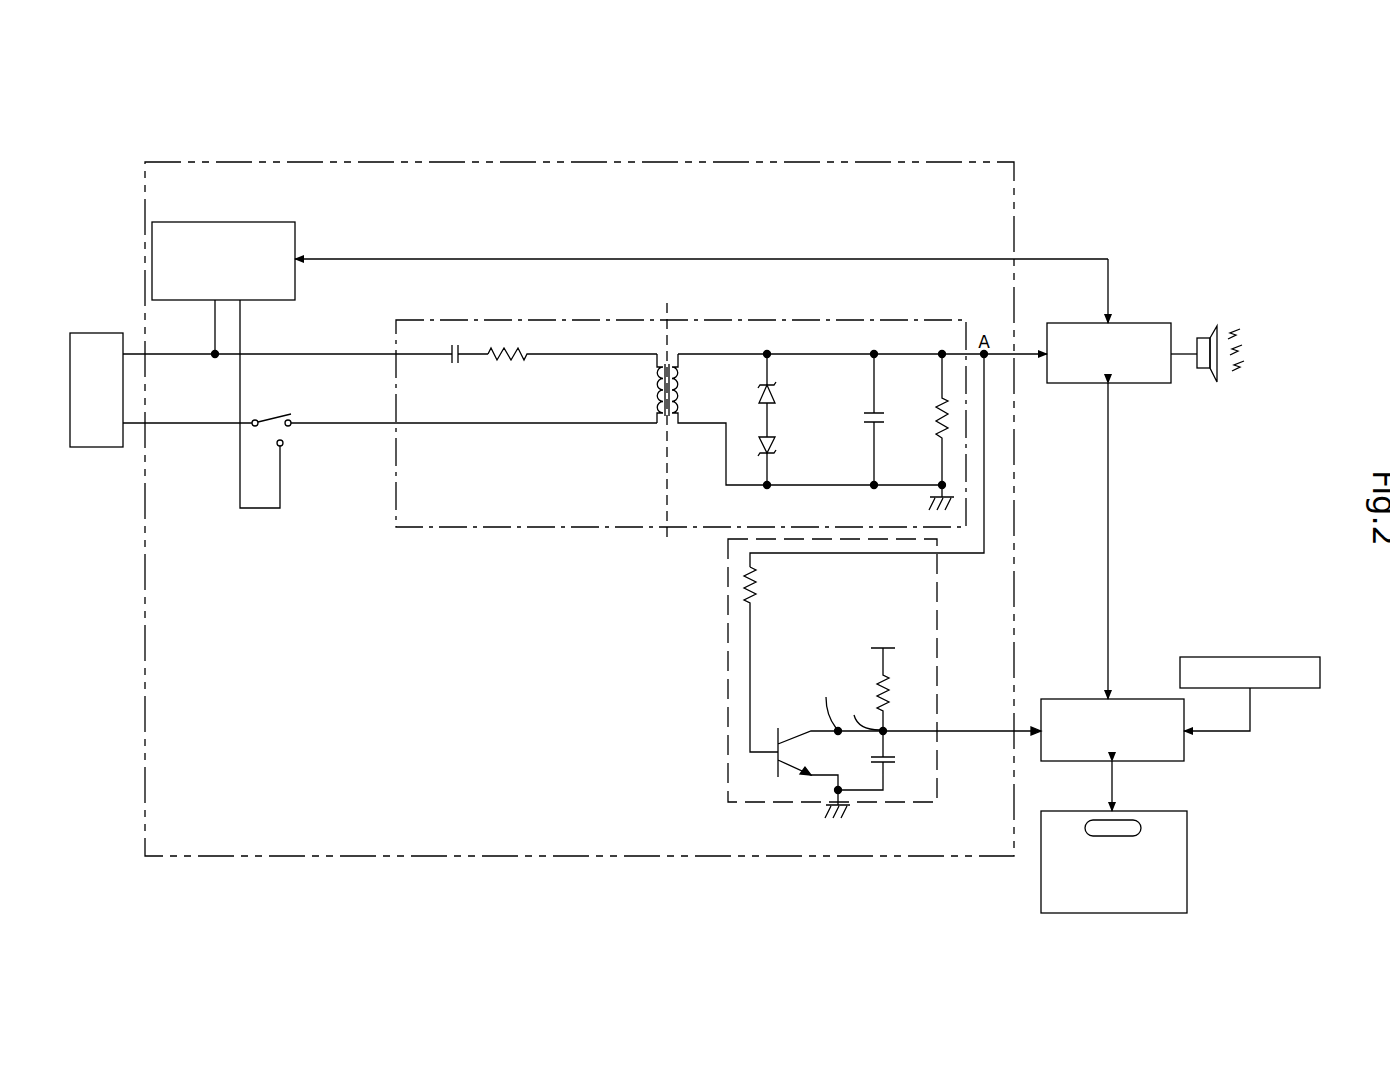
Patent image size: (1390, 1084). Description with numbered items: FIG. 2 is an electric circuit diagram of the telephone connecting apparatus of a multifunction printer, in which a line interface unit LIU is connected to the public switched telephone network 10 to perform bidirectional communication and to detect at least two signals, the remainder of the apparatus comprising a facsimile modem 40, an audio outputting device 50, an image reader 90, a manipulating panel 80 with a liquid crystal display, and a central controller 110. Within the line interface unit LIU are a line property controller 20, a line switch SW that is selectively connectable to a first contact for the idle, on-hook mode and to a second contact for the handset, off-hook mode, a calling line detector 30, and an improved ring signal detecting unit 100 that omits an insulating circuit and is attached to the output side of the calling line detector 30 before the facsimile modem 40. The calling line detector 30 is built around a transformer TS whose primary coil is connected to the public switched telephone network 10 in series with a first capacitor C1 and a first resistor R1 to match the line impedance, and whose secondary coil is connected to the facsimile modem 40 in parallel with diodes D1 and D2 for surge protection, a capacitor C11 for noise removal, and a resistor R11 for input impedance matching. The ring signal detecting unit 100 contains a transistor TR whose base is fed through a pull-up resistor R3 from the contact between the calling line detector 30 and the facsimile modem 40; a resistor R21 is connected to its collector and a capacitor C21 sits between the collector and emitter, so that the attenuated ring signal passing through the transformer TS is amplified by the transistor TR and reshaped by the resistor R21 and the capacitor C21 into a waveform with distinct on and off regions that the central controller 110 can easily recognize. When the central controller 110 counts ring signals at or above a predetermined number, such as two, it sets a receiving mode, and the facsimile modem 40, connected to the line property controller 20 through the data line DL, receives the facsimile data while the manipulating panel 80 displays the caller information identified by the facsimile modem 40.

The public switched telephone network 10 is at (96, 333).
The line property controller 20 is at (263, 222).
The calling line detector 30 is at (681, 422).
The facsimile modem 40 is at (1155, 323).
The audio outputting device 50 is at (1218, 330).
The manipulating panel 80 is at (1153, 811).
The image reader 90 is at (1265, 657).
The ring signal detecting unit 100 is at (854, 678).
The central controller 110 is at (1147, 699).
The line interface unit LIU is at (563, 162).
The data line DL is at (732, 258).
The line switch SW is at (270, 408).
The first capacitor C1 is at (466, 369).
The first resistor R1 is at (572, 371).
The transformer TS is at (665, 414).
The diode D1 is at (786, 394).
The diode D2 is at (786, 463).
The capacitor C11 is at (857, 420).
The resistor R11 is at (925, 431).
The pull-up resistor R3 is at (764, 659).
The transistor TR is at (909, 765).
The resistor R21 is at (895, 694).
The capacitor C21 is at (865, 763).